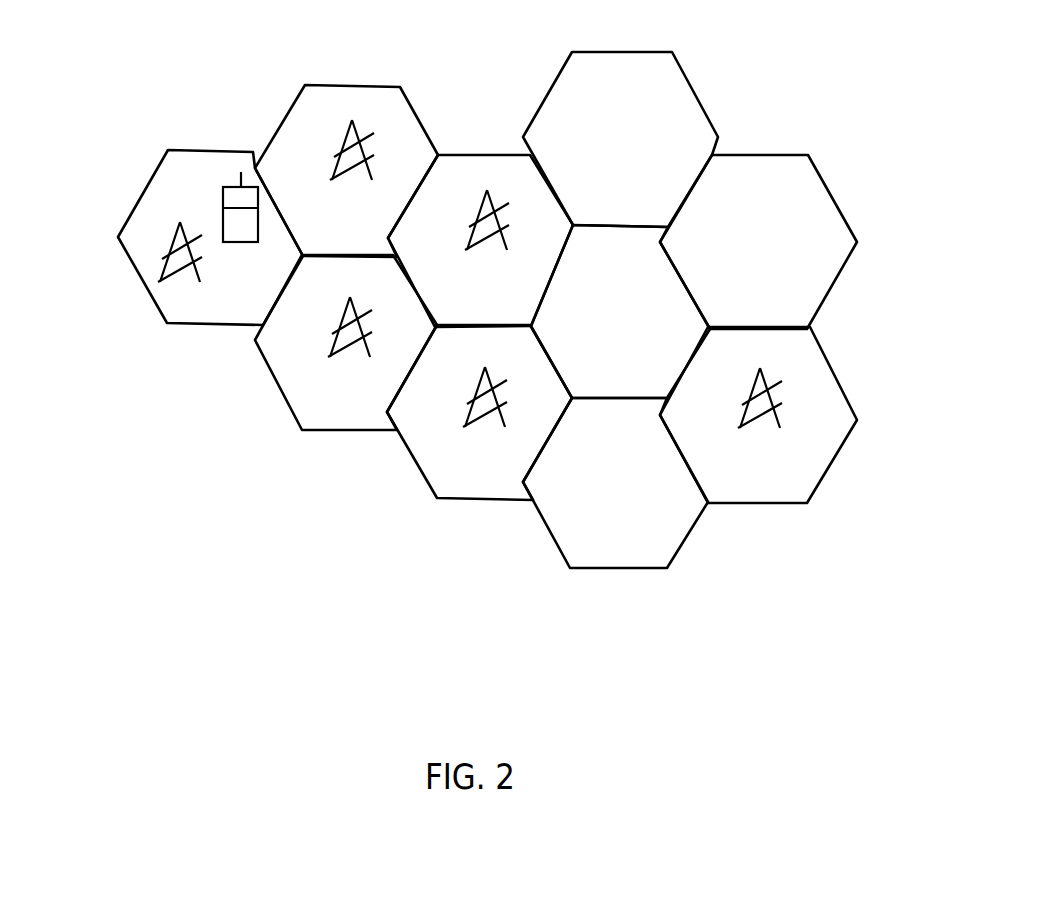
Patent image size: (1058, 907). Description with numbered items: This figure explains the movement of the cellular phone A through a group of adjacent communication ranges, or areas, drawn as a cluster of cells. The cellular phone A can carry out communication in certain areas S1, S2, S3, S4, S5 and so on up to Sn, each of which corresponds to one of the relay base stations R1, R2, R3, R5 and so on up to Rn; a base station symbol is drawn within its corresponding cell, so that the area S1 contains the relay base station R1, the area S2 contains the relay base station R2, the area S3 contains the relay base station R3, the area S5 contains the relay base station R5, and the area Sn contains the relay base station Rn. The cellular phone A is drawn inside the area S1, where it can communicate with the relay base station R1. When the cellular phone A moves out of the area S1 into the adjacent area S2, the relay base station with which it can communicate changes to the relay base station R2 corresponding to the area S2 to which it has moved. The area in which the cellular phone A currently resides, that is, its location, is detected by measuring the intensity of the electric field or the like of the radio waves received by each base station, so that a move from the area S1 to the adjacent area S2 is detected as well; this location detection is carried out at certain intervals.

The area S1 is at (150, 298).
The area S2 is at (285, 407).
The area S3 is at (417, 466).
The area S4 is at (353, 84).
The area S5 is at (480, 155).
The area Sn is at (828, 358).
The relay base station R1 is at (168, 258).
The relay base station R2 is at (337, 335).
The relay base station R3 is at (470, 403).
The relay base station R5 is at (472, 223).
The relay base station Rn is at (783, 425).
The cellular phone A is at (235, 197).